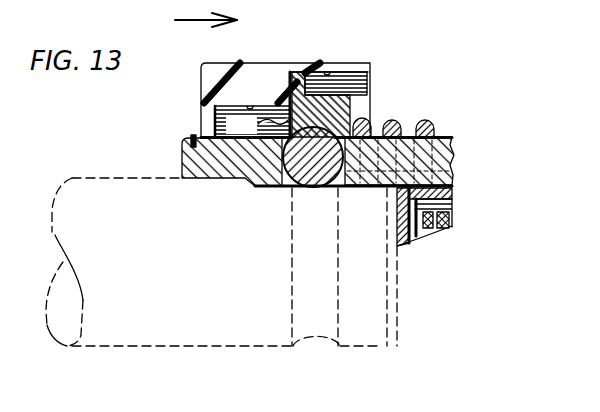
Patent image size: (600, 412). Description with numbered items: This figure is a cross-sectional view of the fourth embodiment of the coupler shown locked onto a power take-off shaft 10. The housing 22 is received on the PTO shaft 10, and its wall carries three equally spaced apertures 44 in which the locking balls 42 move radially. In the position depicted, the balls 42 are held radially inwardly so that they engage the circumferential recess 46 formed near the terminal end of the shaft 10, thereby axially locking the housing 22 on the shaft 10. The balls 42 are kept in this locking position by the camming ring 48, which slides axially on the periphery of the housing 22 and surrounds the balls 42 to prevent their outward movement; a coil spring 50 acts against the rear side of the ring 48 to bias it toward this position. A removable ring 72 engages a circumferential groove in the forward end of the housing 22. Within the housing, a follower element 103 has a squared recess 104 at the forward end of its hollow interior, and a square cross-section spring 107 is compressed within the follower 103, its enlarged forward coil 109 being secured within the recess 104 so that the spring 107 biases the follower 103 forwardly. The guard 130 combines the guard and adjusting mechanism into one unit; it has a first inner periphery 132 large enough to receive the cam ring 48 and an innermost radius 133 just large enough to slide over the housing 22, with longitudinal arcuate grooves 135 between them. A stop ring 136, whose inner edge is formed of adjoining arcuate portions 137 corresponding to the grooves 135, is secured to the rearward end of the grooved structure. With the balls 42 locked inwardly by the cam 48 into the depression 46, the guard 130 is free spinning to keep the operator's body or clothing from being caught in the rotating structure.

The PTO shaft 10 is at (172, 327).
The housing 22 is at (452, 152).
The locking balls 42 is at (352, 116).
The apertures 44 is at (290, 186).
The circumferential recess 46 is at (313, 338).
The camming ring 48 is at (345, 112).
The coil spring 50 is at (432, 122).
The removable ring 72 is at (190, 137).
The follower element 103 is at (455, 192).
The squared recess 104 is at (400, 192).
The spring 107 is at (455, 217).
The enlarged forward coil 109 is at (412, 244).
The guard 130 is at (251, 60).
The first inner periphery 132 is at (333, 73).
The innermost radius 133 is at (196, 133).
The arcuate grooves 135 is at (259, 88).
The stop ring 136 is at (300, 62).
The arcuate portions 137 is at (257, 106).